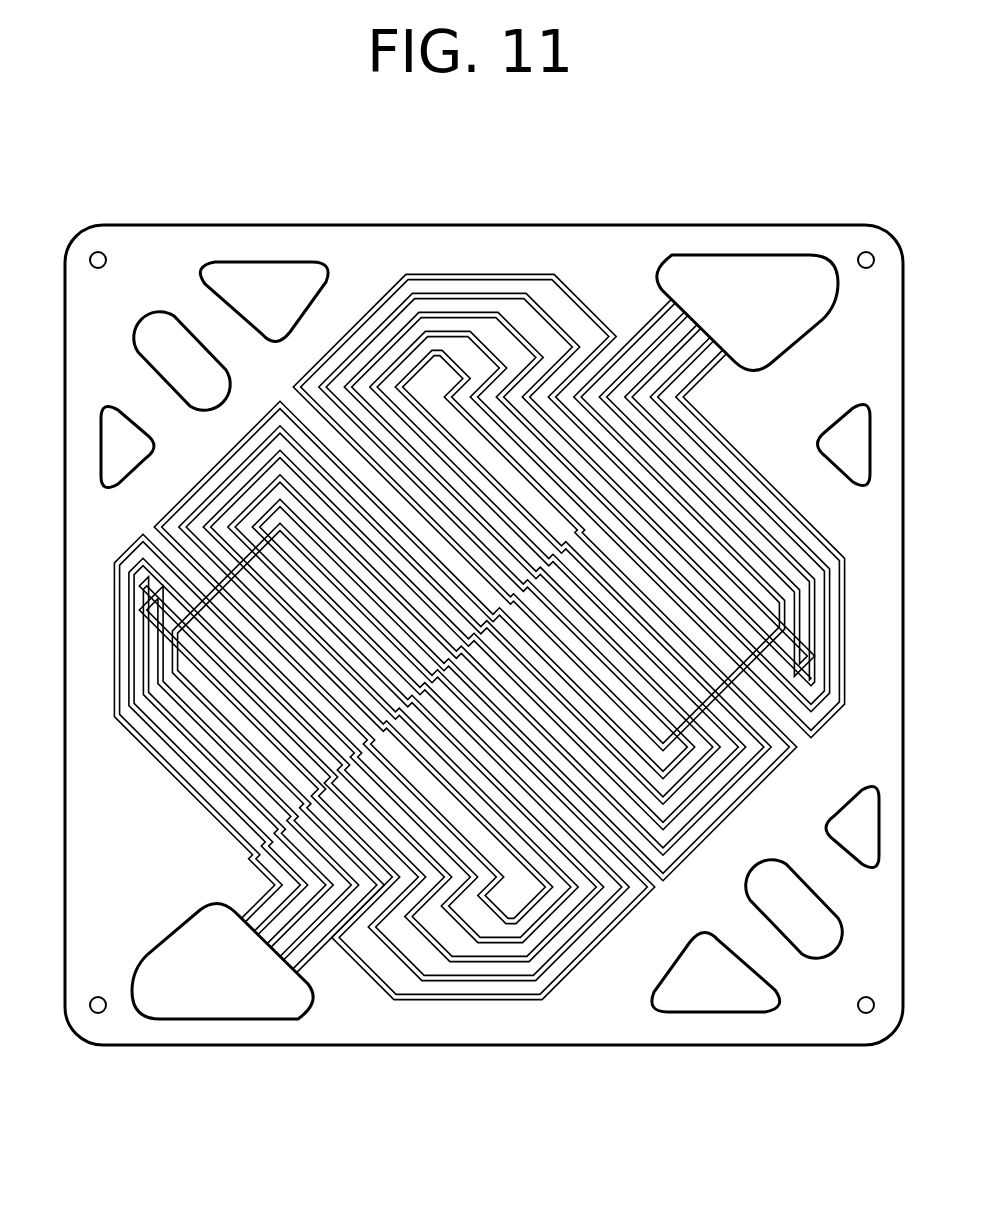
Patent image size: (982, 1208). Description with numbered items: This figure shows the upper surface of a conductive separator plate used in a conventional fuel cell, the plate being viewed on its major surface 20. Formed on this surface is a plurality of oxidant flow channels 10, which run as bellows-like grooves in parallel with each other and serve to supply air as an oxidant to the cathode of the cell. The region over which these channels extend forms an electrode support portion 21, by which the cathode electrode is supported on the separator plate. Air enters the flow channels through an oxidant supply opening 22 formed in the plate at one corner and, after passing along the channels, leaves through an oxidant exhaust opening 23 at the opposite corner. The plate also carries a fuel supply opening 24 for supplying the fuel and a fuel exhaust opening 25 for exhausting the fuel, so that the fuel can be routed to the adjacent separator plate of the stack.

The oxidant flow channels 10 is at (657, 302).
The major surface 20 is at (485, 1025).
The electrode support portion 21 is at (475, 290).
The oxidant supply opening 22 is at (750, 275).
The oxidant exhaust opening 23 is at (230, 995).
The fuel supply opening 24 is at (275, 275).
The fuel exhaust opening 25 is at (718, 995).